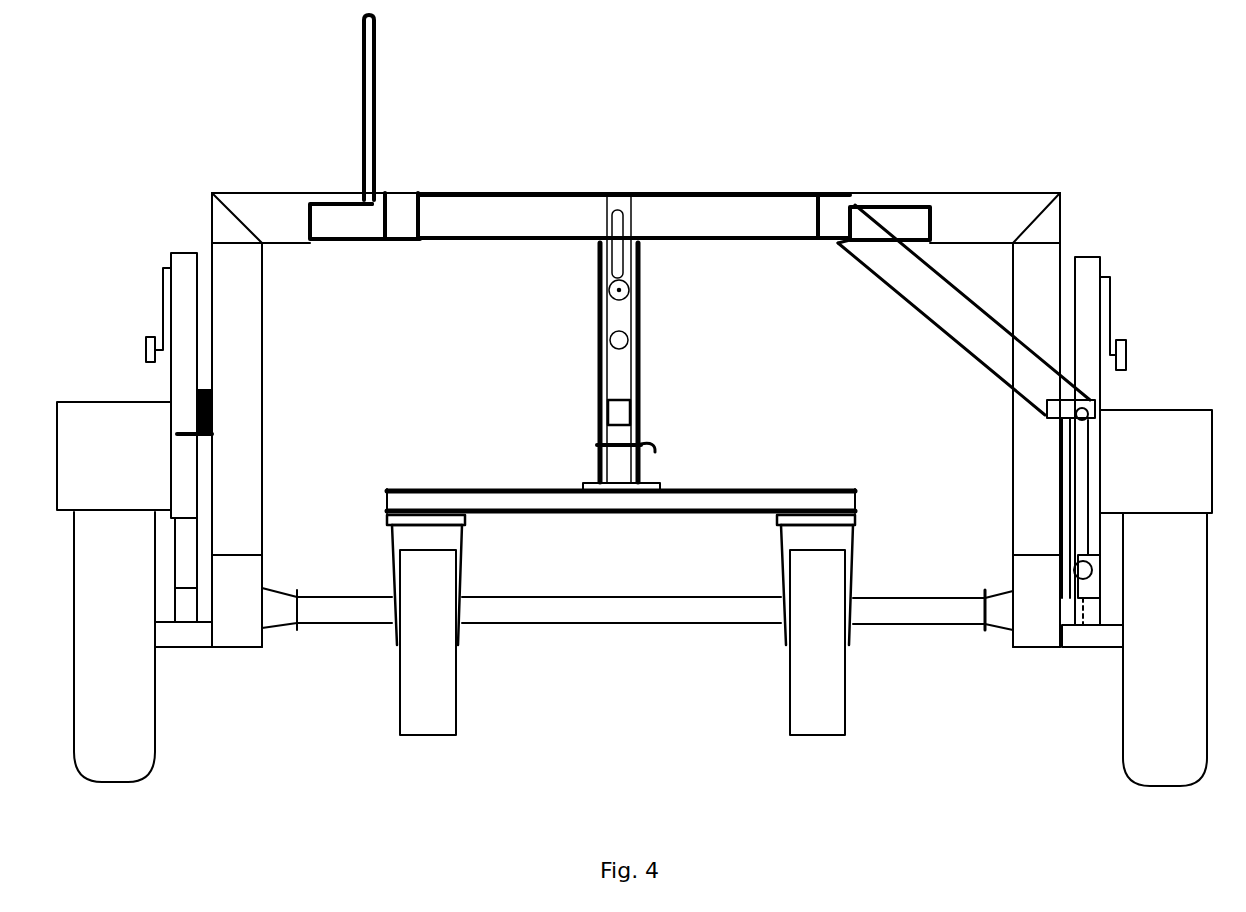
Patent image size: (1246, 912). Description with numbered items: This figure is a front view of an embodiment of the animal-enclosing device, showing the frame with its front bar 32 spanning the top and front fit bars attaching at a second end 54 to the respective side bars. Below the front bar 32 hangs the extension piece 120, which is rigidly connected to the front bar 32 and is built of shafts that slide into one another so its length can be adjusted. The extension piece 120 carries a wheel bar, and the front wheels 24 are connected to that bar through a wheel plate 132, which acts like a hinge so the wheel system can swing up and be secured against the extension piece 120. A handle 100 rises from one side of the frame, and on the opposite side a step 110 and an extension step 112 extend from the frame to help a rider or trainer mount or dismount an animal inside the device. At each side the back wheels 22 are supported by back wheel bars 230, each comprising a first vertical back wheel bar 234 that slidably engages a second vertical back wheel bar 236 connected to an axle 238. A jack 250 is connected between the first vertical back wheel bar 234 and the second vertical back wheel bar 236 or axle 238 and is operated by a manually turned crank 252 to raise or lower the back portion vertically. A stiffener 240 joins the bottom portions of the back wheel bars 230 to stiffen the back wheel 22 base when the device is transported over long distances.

The back wheel 22 is at (140, 733).
The front wheel 24 is at (438, 708).
The front bar 32 is at (703, 218).
The second end 54 is at (340, 217).
The handle 100 is at (375, 133).
The step 110 is at (967, 323).
The extension step 112 is at (1082, 472).
The extension piece 120 is at (572, 325).
The wheel plate 132 is at (598, 548).
The back wheel bar 230 is at (270, 212).
The first vertical back wheel bar 234 is at (232, 277).
The second vertical back wheel bar 236 is at (247, 628).
The axle 238 is at (180, 633).
The stiffener 240 is at (880, 610).
The jack 250 is at (187, 382).
The crank 252 is at (147, 345).